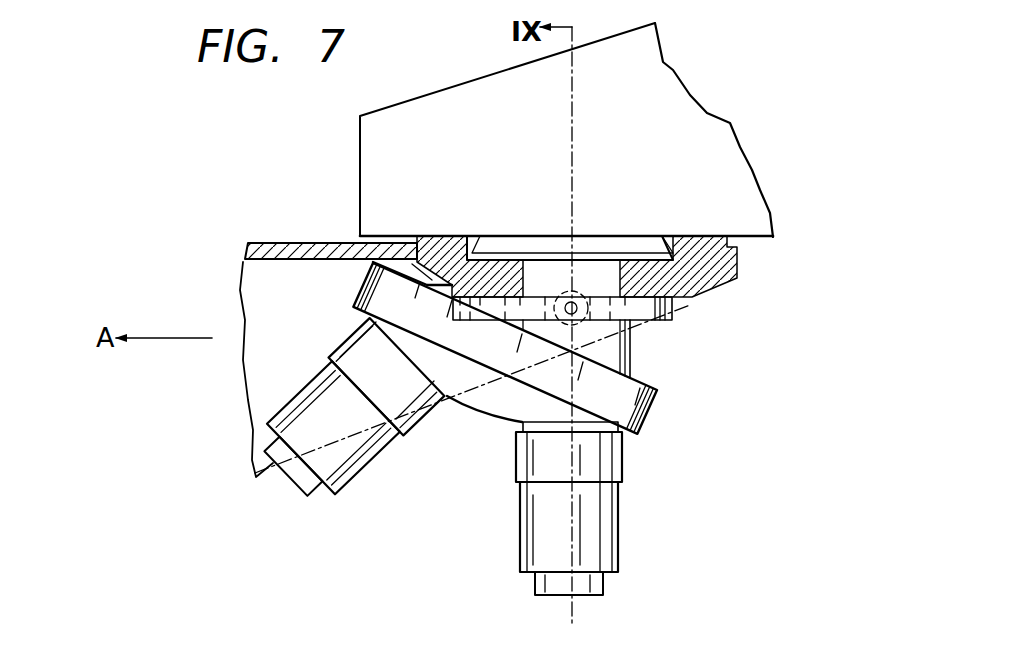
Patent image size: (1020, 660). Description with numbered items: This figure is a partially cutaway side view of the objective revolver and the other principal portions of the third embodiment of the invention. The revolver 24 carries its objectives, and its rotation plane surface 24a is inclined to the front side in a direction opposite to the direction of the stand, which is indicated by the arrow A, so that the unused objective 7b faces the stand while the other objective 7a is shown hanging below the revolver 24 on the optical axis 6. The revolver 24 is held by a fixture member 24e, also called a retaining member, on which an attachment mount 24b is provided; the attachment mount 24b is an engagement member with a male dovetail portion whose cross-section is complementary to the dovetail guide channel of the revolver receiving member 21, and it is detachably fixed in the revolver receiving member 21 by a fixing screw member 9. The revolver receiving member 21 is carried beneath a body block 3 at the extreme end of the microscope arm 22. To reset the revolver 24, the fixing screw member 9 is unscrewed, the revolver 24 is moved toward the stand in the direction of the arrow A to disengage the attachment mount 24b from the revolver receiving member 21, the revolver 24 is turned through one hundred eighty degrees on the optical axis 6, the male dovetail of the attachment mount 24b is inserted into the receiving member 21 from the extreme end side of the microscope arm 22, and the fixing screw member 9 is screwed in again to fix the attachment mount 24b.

The housing block 3 is at (698, 150).
The optical axis 6 is at (574, 611).
The vertical actuating cylinder 7a is at (610, 532).
The unused objective 7b is at (355, 462).
The fixing screw member 9 is at (557, 292).
The revolver receiving member 21 is at (737, 280).
The microscope arm 22 is at (307, 243).
The revolver 24 is at (556, 327).
The rotation plane surface 24a is at (632, 378).
The attachment mount 24b is at (673, 313).
The fixture member 24e is at (628, 350).